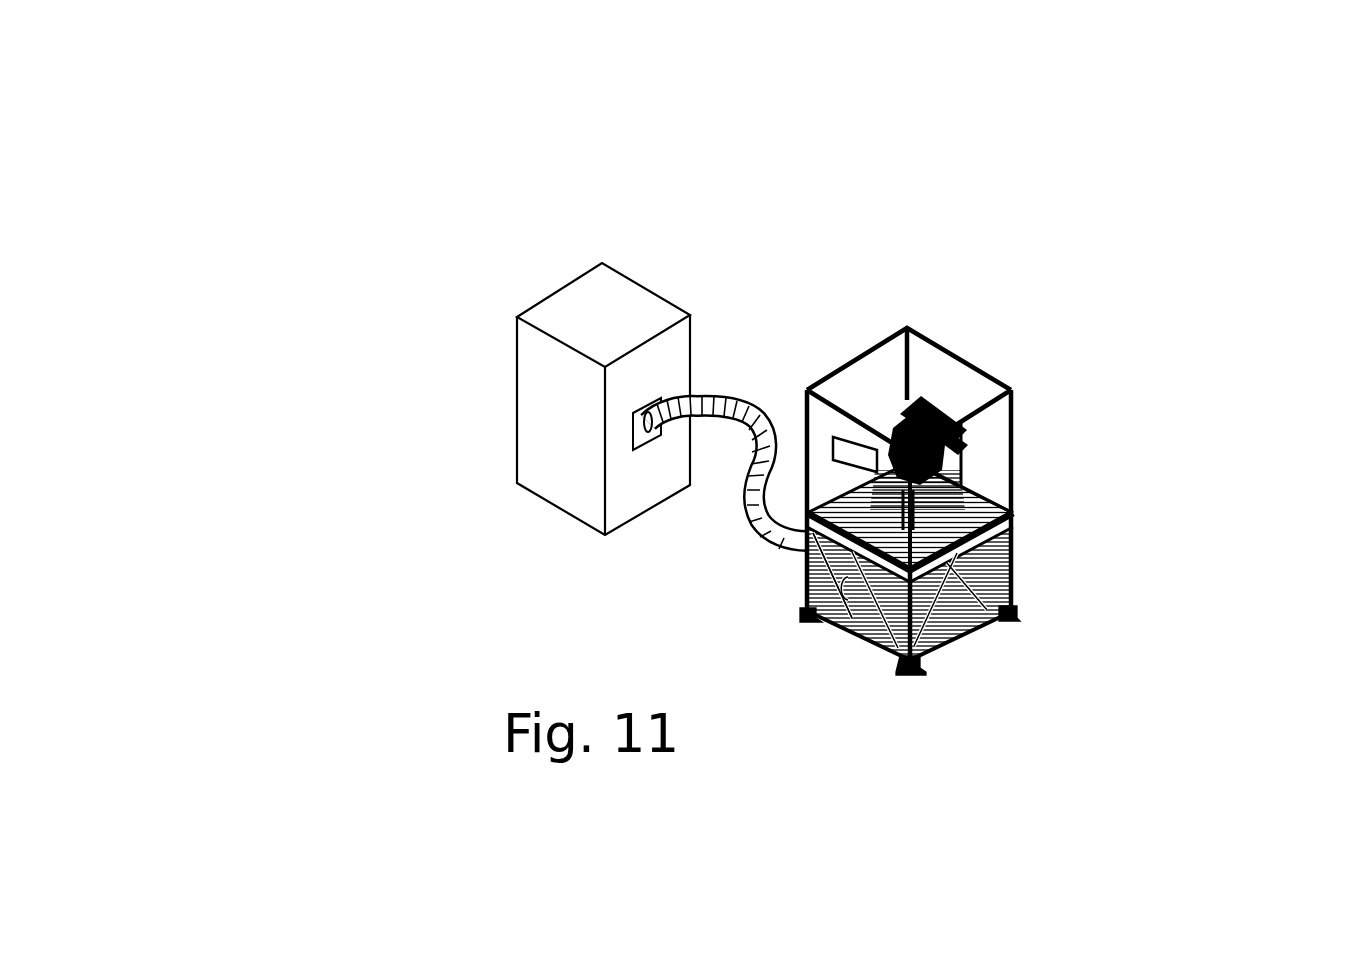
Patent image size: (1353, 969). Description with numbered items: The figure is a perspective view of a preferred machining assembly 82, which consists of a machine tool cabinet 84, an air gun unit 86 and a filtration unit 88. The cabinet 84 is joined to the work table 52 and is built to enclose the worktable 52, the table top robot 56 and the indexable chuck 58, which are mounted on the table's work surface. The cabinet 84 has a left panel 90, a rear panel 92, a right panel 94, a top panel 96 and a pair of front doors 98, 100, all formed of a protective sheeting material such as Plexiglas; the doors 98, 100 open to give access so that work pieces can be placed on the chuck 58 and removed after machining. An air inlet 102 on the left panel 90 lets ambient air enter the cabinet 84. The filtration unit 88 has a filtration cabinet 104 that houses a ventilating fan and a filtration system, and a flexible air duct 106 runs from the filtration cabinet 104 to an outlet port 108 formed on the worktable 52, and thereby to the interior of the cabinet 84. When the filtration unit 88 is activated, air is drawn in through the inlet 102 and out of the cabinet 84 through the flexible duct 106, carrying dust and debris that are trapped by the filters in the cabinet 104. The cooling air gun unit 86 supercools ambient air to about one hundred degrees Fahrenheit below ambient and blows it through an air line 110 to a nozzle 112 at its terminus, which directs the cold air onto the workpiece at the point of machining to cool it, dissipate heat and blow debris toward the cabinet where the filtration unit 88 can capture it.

The work table 52 is at (1018, 530).
The table top robot 56 is at (932, 405).
The indexable chuck 58 is at (987, 615).
The machining assembly 82 is at (912, 212).
The machine tool cabinet 84 is at (1060, 481).
The air gun unit 86 is at (807, 554).
The filtration unit 88 is at (517, 290).
The left panel 90 is at (808, 388).
The rear panel 92 is at (860, 388).
The right panel 94 is at (932, 372).
The top panel 96 is at (958, 400).
The front door 98 is at (992, 442).
The front door 100 is at (913, 667).
The air inlet 102 is at (828, 422).
The filtration cabinet 104 is at (568, 425).
The flexible air duct 106 is at (745, 421).
The outlet port 108 is at (807, 551).
The air line 110 is at (853, 621).
The nozzle 112 is at (807, 613).